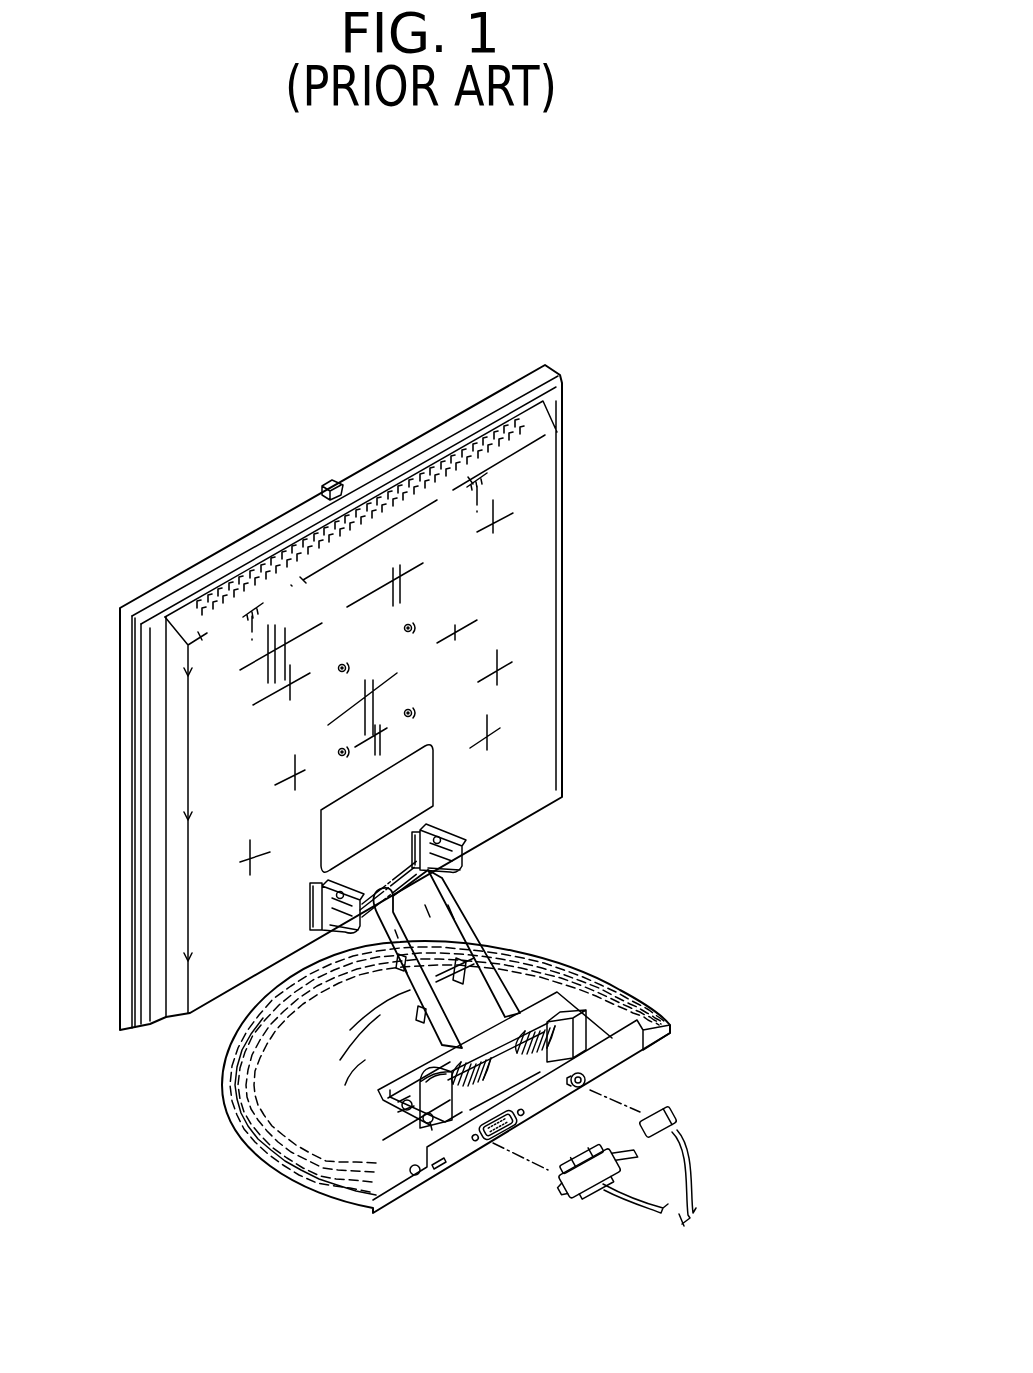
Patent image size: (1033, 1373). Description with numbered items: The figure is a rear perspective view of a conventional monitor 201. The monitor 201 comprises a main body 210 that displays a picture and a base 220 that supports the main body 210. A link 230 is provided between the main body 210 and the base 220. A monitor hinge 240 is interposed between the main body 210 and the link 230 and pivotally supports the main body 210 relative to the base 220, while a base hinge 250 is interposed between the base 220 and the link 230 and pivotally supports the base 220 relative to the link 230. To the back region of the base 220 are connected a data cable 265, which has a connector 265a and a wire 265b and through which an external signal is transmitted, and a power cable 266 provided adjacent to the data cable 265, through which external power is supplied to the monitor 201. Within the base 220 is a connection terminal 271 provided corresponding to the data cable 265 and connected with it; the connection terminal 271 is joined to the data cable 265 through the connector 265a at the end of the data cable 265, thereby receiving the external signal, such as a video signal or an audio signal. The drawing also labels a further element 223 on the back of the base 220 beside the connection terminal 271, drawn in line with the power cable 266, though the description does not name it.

The monitor 201 is at (623, 460).
The main body 210 is at (556, 668).
The base 220 is at (613, 1000).
The power jack 223 is at (590, 1082).
The link 230 is at (440, 927).
The monitor hinge 240 is at (392, 868).
The base hinge 250 is at (530, 997).
The data cable 265 is at (670, 1295).
The connector 265a is at (590, 1167).
The wire 265b is at (643, 1207).
The power cable 266 is at (660, 1115).
The connection terminal 271 is at (507, 1147).